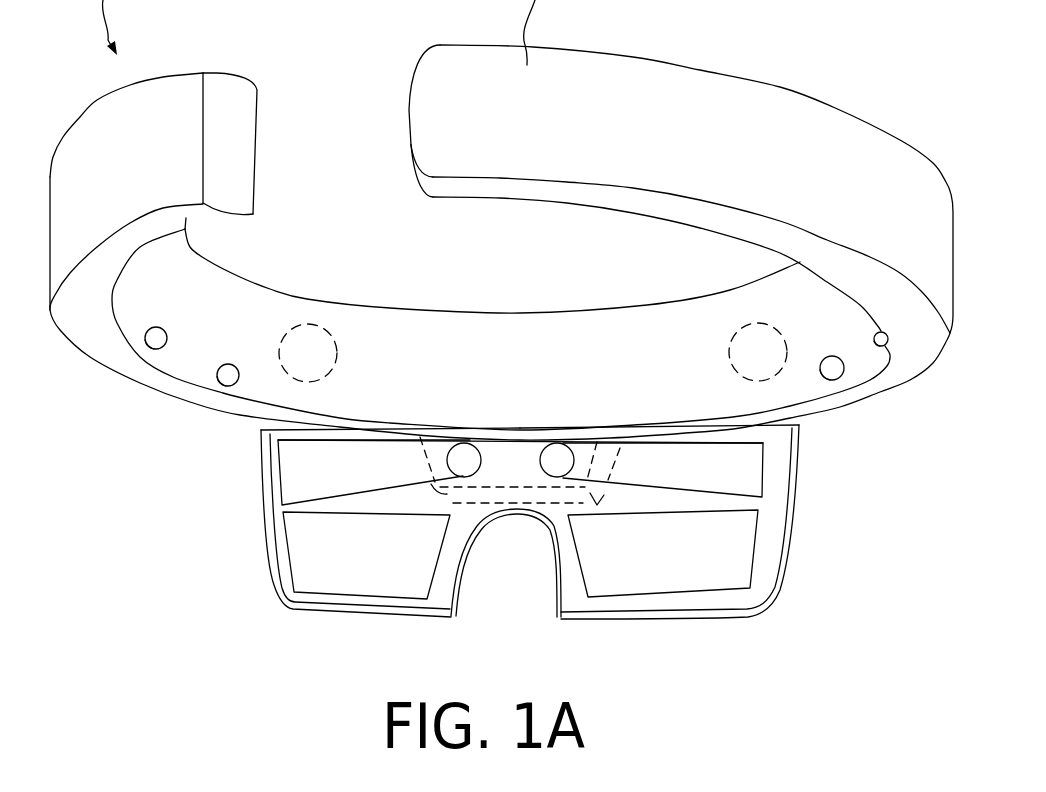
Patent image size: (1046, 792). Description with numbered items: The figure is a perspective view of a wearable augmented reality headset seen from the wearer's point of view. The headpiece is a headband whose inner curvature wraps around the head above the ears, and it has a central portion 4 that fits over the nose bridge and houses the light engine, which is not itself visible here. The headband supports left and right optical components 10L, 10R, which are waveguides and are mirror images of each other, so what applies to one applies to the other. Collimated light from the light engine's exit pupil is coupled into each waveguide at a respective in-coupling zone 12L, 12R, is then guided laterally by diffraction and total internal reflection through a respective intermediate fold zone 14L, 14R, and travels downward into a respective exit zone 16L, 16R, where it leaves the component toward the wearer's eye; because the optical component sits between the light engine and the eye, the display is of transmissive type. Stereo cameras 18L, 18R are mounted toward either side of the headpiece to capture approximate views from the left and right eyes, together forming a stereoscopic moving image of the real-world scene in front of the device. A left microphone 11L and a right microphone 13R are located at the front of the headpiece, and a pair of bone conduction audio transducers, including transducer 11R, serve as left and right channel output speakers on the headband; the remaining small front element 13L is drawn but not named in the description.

The central portion 4 is at (507, 488).
The left optical component 10L is at (365, 613).
The right optical component 10R is at (612, 617).
The left microphone 11L is at (159, 327).
The bone conduction audio transducer 11R is at (886, 332).
The left in-coupling zone 12L is at (466, 450).
The right in-coupling zone 12R is at (560, 450).
The left sensor 13L is at (228, 364).
The right microphone 13R is at (835, 357).
The left intermediate (fold) zone 14L is at (283, 458).
The right intermediate (fold) zone 14R is at (760, 468).
The left exit zone 16L is at (302, 573).
The right exit zone 16R is at (752, 570).
The left stereo camera 18L is at (313, 324).
The right stereo camera 18R is at (750, 323).